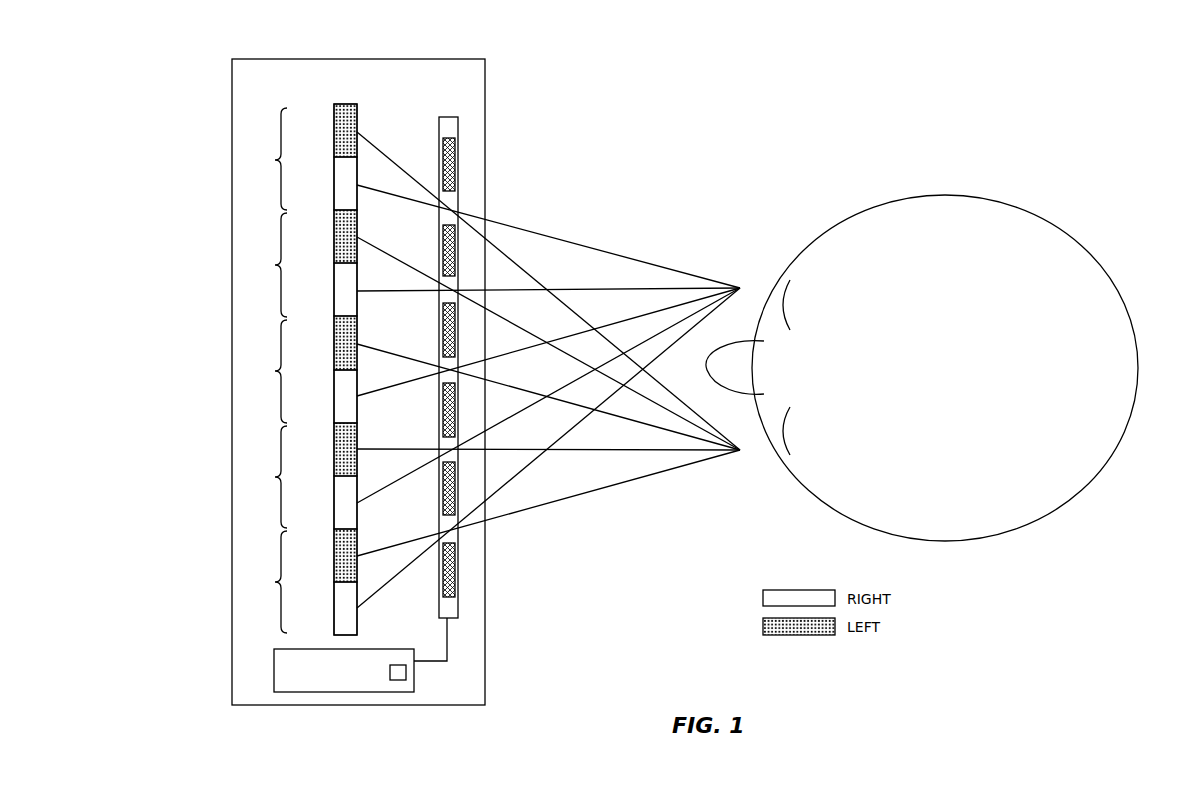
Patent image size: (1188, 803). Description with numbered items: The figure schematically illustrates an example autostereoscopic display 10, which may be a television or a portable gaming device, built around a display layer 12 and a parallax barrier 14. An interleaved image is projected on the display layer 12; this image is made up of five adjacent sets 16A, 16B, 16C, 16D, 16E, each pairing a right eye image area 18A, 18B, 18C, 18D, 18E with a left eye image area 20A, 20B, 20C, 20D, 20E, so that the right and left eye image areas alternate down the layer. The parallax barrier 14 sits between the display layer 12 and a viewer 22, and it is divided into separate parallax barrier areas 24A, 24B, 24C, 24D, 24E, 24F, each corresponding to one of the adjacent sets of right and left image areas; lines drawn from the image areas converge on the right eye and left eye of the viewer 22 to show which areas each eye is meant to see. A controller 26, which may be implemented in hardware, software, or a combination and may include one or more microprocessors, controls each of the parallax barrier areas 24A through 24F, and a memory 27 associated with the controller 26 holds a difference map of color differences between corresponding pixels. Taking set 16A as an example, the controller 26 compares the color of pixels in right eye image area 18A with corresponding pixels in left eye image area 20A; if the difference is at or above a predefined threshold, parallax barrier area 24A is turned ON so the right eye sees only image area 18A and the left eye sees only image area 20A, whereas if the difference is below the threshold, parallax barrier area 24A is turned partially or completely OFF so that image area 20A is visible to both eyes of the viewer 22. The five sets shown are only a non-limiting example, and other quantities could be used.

The autostereoscopic display 10 is at (289, 58).
The display layer 12 is at (346, 84).
The parallax barrier 14 is at (447, 100).
The set of image areas 16A is at (265, 159).
The set of image areas 16B is at (265, 265).
The set of image areas 16C is at (265, 371).
The set of image areas 16D is at (265, 477).
The set of image areas 16E is at (265, 582).
The right eye image area 18A is at (334, 186).
The right eye image area 18B is at (334, 288).
The right eye image area 18C is at (334, 395).
The right eye image area 18D is at (334, 496).
The right eye image area 18E is at (334, 603).
The left eye image area 20A is at (334, 133).
The left eye image area 20B is at (334, 245).
The left eye image area 20C is at (334, 343).
The left eye image area 20D is at (334, 451).
The left eye image area 20E is at (334, 558).
The viewer 22 is at (1004, 202).
The parallax barrier area 24A is at (443, 156).
The parallax barrier area 24B is at (443, 240).
The parallax barrier area 24C is at (443, 328).
The parallax barrier area 24D is at (443, 418).
The parallax barrier area 24E is at (443, 482).
The parallax barrier area 24F is at (443, 575).
The controller 26 is at (315, 692).
The memory 27 is at (398, 680).